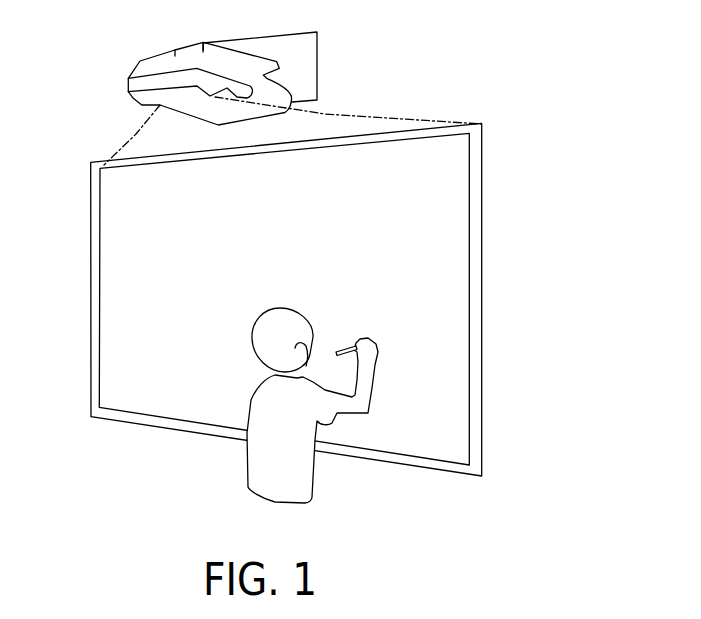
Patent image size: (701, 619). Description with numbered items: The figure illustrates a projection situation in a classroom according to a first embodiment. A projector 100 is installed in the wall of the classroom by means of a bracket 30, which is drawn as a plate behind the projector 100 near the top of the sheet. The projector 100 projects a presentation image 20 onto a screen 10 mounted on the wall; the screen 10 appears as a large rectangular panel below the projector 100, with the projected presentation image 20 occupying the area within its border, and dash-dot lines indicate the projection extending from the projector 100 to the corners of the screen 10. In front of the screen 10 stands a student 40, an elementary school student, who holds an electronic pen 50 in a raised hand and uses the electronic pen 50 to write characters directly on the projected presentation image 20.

The screen 10 is at (483, 130).
The presentation image 20 is at (470, 168).
The bracket 30 is at (305, 63).
The student 40 is at (308, 480).
The electronic pen 50 is at (352, 342).
The projector 100 is at (148, 74).